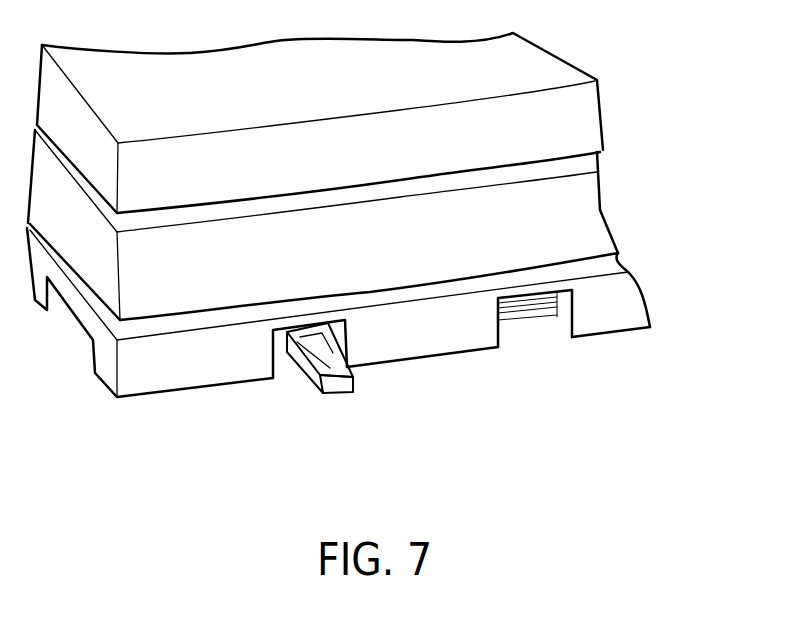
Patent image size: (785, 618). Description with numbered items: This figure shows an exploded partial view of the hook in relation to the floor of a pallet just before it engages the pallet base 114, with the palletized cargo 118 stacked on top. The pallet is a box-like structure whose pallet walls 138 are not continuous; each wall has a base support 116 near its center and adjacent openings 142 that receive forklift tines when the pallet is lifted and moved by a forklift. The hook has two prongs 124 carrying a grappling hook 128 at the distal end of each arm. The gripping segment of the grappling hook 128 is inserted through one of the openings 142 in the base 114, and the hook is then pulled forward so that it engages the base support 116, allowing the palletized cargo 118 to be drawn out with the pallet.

The pallet base 114 is at (607, 290).
The base support 116 is at (420, 338).
The cargo 118 is at (590, 217).
The prong 124 is at (532, 312).
The grappling hook 128 is at (337, 388).
The pallet wall 138 is at (175, 368).
The opening 142 is at (287, 365).